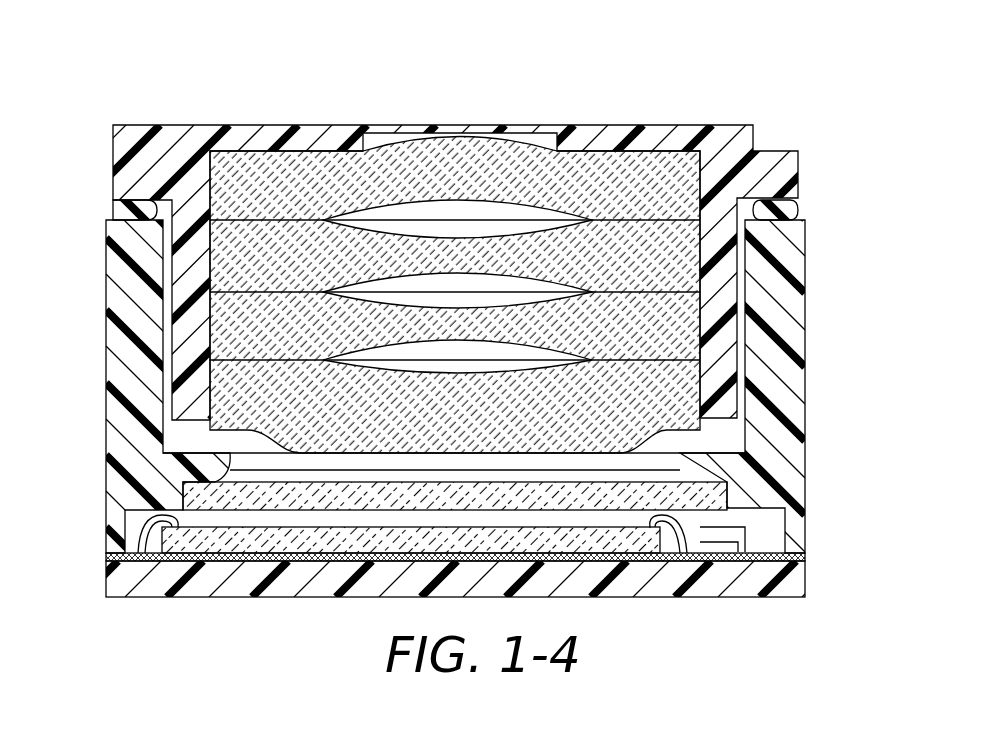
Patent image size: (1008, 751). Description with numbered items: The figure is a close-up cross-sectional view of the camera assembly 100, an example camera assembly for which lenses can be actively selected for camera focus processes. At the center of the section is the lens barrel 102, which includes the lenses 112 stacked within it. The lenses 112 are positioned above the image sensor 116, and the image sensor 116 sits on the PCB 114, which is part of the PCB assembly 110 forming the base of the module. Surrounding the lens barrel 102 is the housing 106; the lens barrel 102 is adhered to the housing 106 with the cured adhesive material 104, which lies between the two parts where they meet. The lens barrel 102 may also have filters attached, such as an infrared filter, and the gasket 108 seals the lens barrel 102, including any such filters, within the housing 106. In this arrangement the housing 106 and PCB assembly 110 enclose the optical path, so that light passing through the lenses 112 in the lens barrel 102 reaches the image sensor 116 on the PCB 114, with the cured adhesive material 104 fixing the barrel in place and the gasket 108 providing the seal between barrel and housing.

The camera assembly 100 is at (137, 46).
The lens barrel 102 is at (152, 125).
The cured adhesive material 104 is at (118, 210).
The housing 106 is at (108, 300).
The gasket 108 is at (230, 478).
The PCB assembly 110 is at (818, 544).
The lenses 112 is at (375, 158).
The PCB 114 is at (105, 555).
The image sensor 116 is at (162, 538).